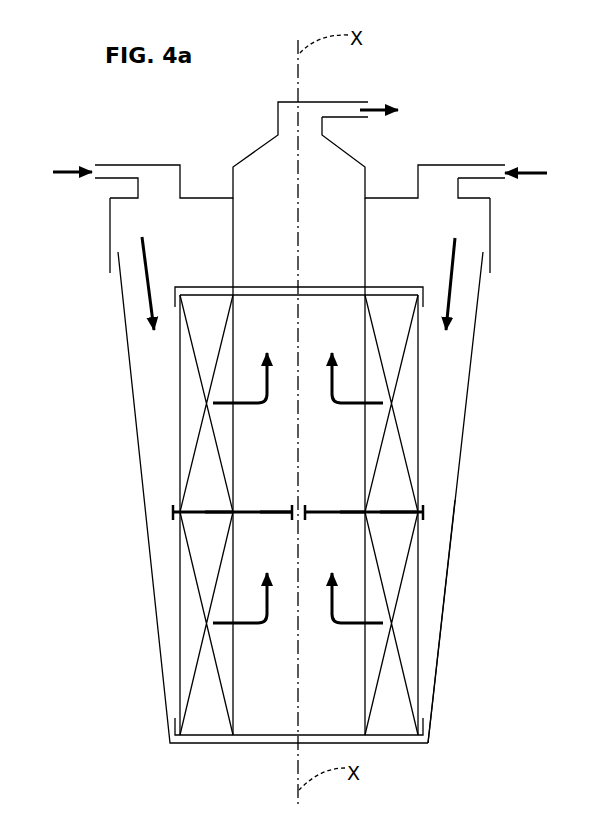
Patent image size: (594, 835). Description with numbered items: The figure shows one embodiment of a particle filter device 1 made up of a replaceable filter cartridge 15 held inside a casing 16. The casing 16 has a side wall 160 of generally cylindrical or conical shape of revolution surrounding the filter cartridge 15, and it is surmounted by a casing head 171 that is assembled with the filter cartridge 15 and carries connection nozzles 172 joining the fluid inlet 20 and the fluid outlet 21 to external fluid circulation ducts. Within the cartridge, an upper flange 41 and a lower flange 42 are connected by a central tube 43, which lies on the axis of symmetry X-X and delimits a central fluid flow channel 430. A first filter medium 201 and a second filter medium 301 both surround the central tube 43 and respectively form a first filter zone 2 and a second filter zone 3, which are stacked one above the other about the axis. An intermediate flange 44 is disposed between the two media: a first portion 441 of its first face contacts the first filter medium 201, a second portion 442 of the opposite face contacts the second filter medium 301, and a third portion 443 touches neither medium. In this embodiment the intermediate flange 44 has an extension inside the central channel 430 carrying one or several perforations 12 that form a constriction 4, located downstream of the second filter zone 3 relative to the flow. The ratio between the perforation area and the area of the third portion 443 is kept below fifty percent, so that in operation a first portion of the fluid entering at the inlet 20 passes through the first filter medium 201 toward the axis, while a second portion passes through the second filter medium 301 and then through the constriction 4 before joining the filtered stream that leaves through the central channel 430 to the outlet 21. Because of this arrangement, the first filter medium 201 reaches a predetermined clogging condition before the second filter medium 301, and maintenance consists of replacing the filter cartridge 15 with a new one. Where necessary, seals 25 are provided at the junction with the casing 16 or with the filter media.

The filter device 1 is at (543, 464).
The first filter zone 2 is at (422, 403).
The second filter zone 3 is at (424, 622).
The constriction 4 is at (331, 505).
The perforation 12 is at (296, 526).
The filter cartridge 15 is at (392, 270).
The casing 16 is at (120, 482).
The fluid inlet 20 is at (72, 170).
The fluid outlet 21 is at (372, 114).
The seal 25 is at (174, 508).
The upper flange 41 is at (424, 297).
The lower flange 42 is at (425, 727).
The central tube 43 is at (363, 560).
The intermediate flange 44 is at (424, 508).
The side wall 160 is at (125, 338).
The casing head 171 is at (110, 240).
The connection nozzles 172 is at (148, 163).
The first filter medium 201 is at (190, 400).
The second filter medium 301 is at (190, 620).
The central fluid flow channel 430 is at (280, 479).
The first portion 441 is at (218, 505).
The second portion 442 is at (218, 521).
The third portion 443 is at (273, 519).